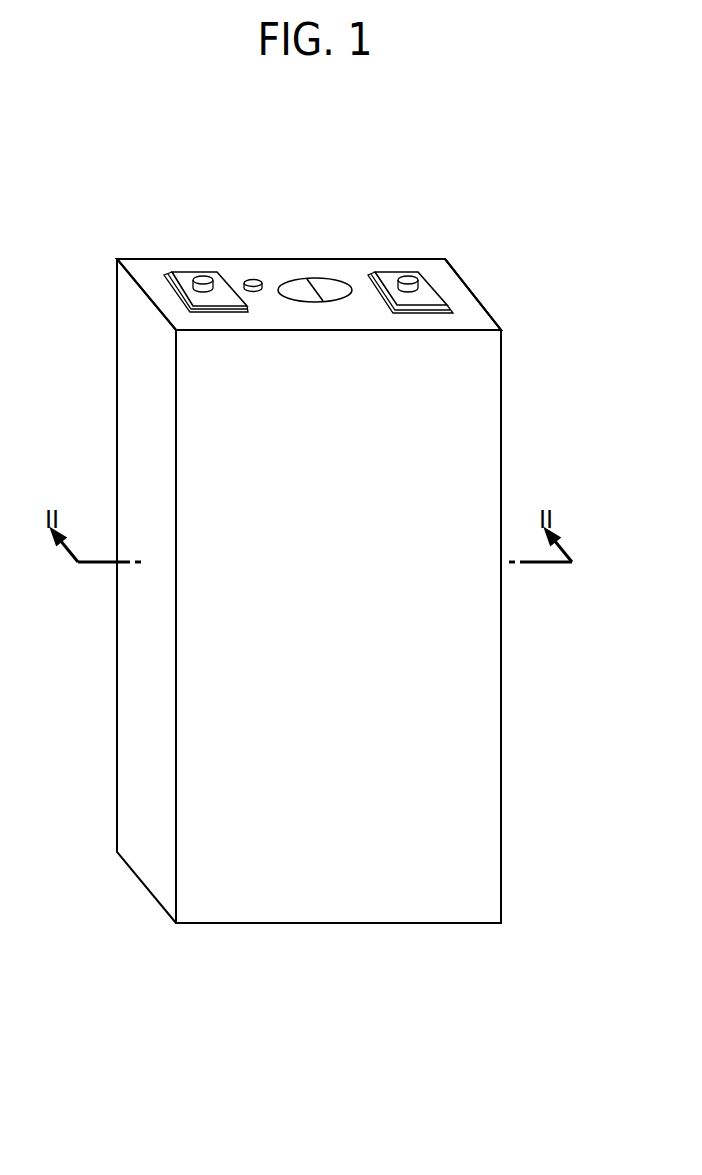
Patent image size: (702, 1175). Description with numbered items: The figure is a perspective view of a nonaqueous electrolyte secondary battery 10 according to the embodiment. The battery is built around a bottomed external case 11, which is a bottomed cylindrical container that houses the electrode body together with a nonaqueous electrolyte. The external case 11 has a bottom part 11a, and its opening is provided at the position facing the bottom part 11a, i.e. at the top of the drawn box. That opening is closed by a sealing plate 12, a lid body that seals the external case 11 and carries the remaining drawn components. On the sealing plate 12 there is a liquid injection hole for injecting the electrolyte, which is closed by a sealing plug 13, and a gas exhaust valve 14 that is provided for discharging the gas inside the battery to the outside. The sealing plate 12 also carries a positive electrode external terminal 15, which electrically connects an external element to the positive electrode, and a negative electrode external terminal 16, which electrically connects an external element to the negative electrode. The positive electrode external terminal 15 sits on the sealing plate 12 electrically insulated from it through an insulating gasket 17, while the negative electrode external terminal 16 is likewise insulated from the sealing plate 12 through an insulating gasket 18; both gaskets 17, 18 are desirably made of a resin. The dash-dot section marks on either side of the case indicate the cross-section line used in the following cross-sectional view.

The nonaqueous electrolyte secondary battery 10 is at (386, 109).
The external case 11 is at (138, 480).
The bottom part 11a is at (309, 923).
The sealing plate 12 is at (145, 267).
The sealing plug 13 is at (253, 280).
The gas exhaust valve 14 is at (325, 287).
The positive electrode external terminal 15 is at (203, 276).
The negative electrode external terminal 16 is at (427, 285).
The insulating gasket 17 is at (181, 297).
The insulating gasket 18 is at (457, 312).